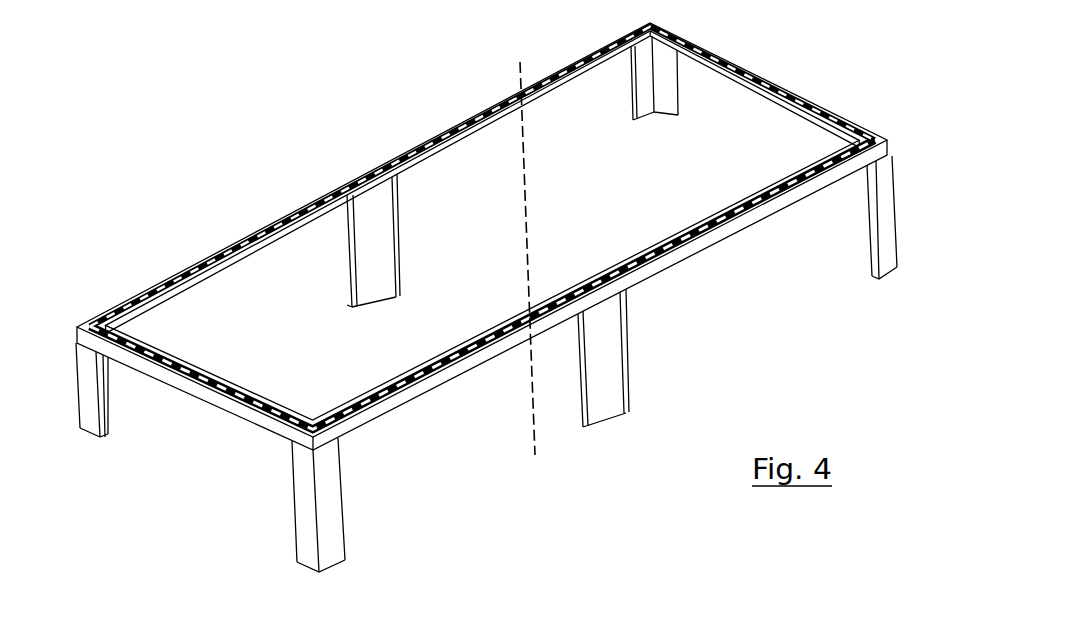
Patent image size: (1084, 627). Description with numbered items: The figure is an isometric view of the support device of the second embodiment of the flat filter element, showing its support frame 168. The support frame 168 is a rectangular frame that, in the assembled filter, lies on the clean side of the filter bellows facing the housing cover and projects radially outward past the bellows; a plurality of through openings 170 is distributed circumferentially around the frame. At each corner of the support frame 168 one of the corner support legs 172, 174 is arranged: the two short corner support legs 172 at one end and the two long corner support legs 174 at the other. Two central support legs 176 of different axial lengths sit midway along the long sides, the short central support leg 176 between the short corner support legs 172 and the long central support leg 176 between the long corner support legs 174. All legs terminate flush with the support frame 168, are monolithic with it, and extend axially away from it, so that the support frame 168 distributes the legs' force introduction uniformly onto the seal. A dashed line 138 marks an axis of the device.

The support frame 168 is at (713, 241).
The through openings 170 is at (418, 145).
The short corner support legs 172 is at (650, 100).
The long corner support legs 174 is at (880, 225).
The central support legs 176 is at (365, 253).
The axis 138 is at (523, 247).